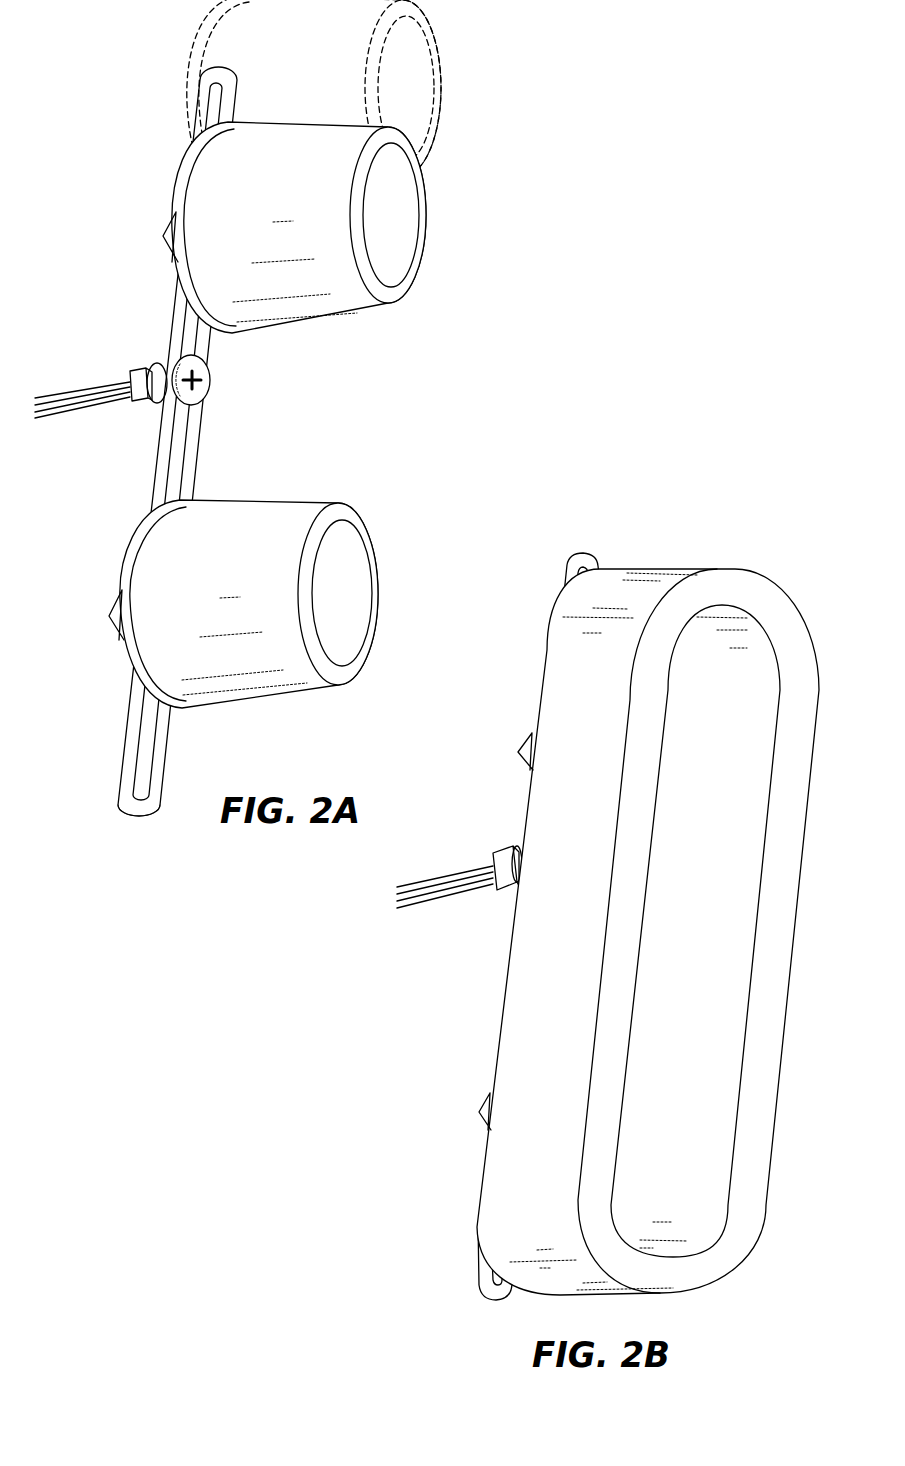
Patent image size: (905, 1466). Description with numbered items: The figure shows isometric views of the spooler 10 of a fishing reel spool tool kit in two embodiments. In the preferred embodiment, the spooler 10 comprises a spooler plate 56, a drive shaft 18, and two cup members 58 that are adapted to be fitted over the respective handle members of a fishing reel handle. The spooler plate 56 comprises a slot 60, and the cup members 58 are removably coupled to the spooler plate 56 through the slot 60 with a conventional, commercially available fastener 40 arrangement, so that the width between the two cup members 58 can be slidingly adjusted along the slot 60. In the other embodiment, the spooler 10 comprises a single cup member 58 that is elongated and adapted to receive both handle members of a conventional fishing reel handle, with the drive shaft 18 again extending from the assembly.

In FIG. 2A, the spooler 10 is at (332, 408).
In FIG. 2B, the spooler 10 is at (514, 926).
In FIG. 2A, the drive shaft 18 is at (88, 390).
In FIG. 2B, the drive shaft 18 is at (458, 880).
In FIG. 2A, the fastener 40 is at (193, 402).
In FIG. 2A, the spooler plate 56 is at (163, 480).
In FIG. 2A, the cup member 58 is at (330, 508).
In FIG. 2B, the cup member 58 is at (557, 993).
In FIG. 2A, the slot 60 is at (148, 739).